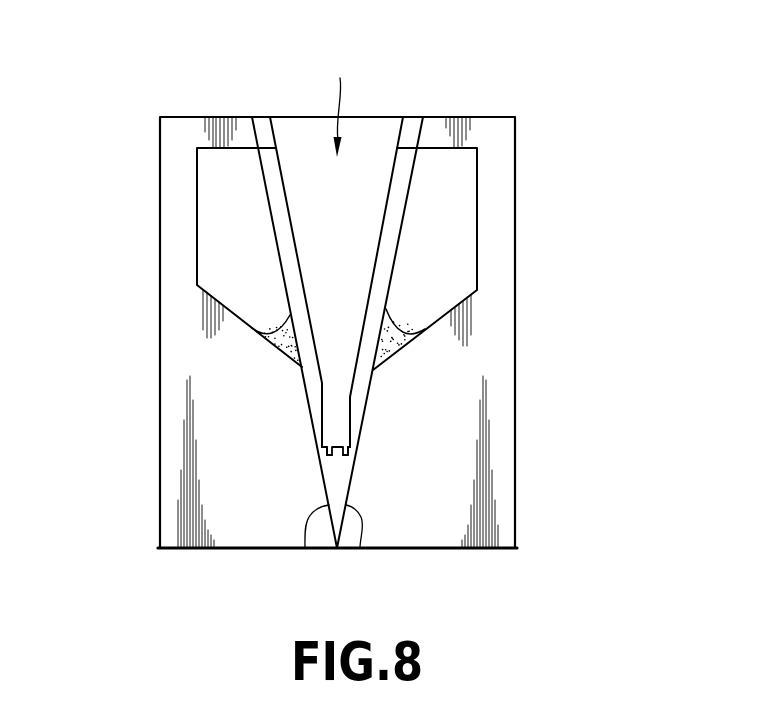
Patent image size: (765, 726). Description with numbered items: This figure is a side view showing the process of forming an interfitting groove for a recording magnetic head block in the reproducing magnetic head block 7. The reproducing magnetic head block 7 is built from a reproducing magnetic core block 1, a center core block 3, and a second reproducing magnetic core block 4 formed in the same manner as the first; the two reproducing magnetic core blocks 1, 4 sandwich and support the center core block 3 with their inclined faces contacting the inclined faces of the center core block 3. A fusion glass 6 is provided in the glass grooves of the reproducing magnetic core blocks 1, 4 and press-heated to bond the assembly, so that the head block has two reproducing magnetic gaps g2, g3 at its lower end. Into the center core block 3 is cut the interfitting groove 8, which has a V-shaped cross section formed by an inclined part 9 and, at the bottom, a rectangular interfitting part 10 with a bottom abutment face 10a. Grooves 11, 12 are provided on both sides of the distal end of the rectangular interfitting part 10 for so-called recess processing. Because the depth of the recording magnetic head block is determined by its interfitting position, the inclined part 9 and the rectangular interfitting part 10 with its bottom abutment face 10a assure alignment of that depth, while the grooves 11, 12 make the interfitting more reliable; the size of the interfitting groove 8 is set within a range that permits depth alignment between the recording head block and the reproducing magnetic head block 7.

The reproducing magnetic core block 1 is at (222, 533).
The center core block 3 is at (398, 139).
The reproducing magnetic core block 4 is at (433, 533).
The fusion glass 6 is at (253, 328).
The reproducing magnetic head block 7 is at (540, 185).
The interfitting groove 8 is at (342, 103).
The inclined part 9 is at (275, 145).
The rectangular interfitting part 10 is at (353, 399).
The bottom abutment face 10a is at (331, 447).
The groove 11 is at (349, 452).
The groove 12 is at (323, 454).
The reproducing magnetic gap g2 is at (305, 548).
The reproducing magnetic gap g3 is at (360, 548).